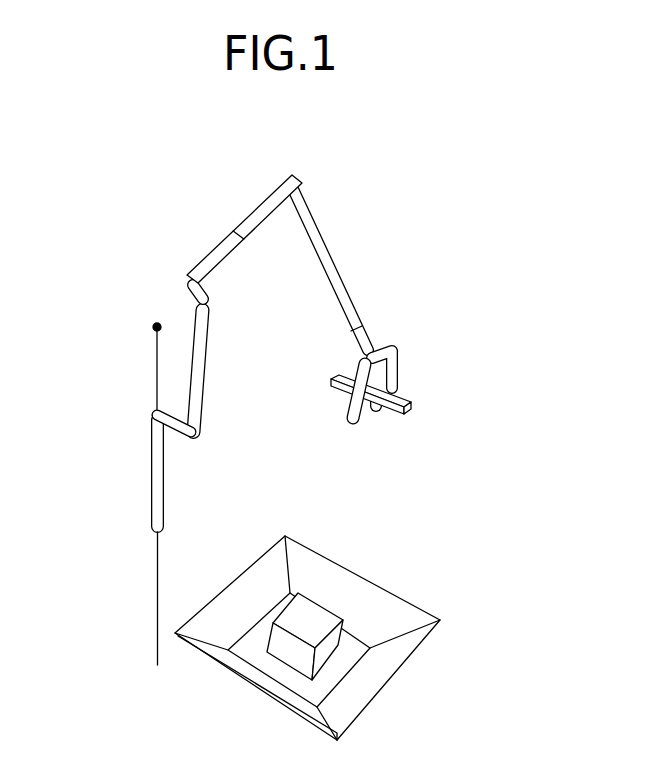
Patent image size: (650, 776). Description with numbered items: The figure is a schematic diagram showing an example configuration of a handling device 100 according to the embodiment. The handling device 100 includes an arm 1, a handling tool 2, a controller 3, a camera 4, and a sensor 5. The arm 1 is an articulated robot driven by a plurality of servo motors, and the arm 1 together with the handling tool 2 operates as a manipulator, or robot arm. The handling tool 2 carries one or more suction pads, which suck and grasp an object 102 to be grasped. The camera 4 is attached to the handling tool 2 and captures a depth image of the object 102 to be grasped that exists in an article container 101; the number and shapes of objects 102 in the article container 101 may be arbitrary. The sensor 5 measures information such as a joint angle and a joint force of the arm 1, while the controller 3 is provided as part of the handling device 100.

The handling device 100 is at (283, 390).
The arm 1 is at (200, 320).
The handling tool 2 is at (388, 380).
The controller 3 is at (150, 469).
The camera 4 is at (412, 405).
The sensor 5 is at (383, 339).
The article container 101 is at (380, 670).
The object to be grasped 102 is at (319, 618).